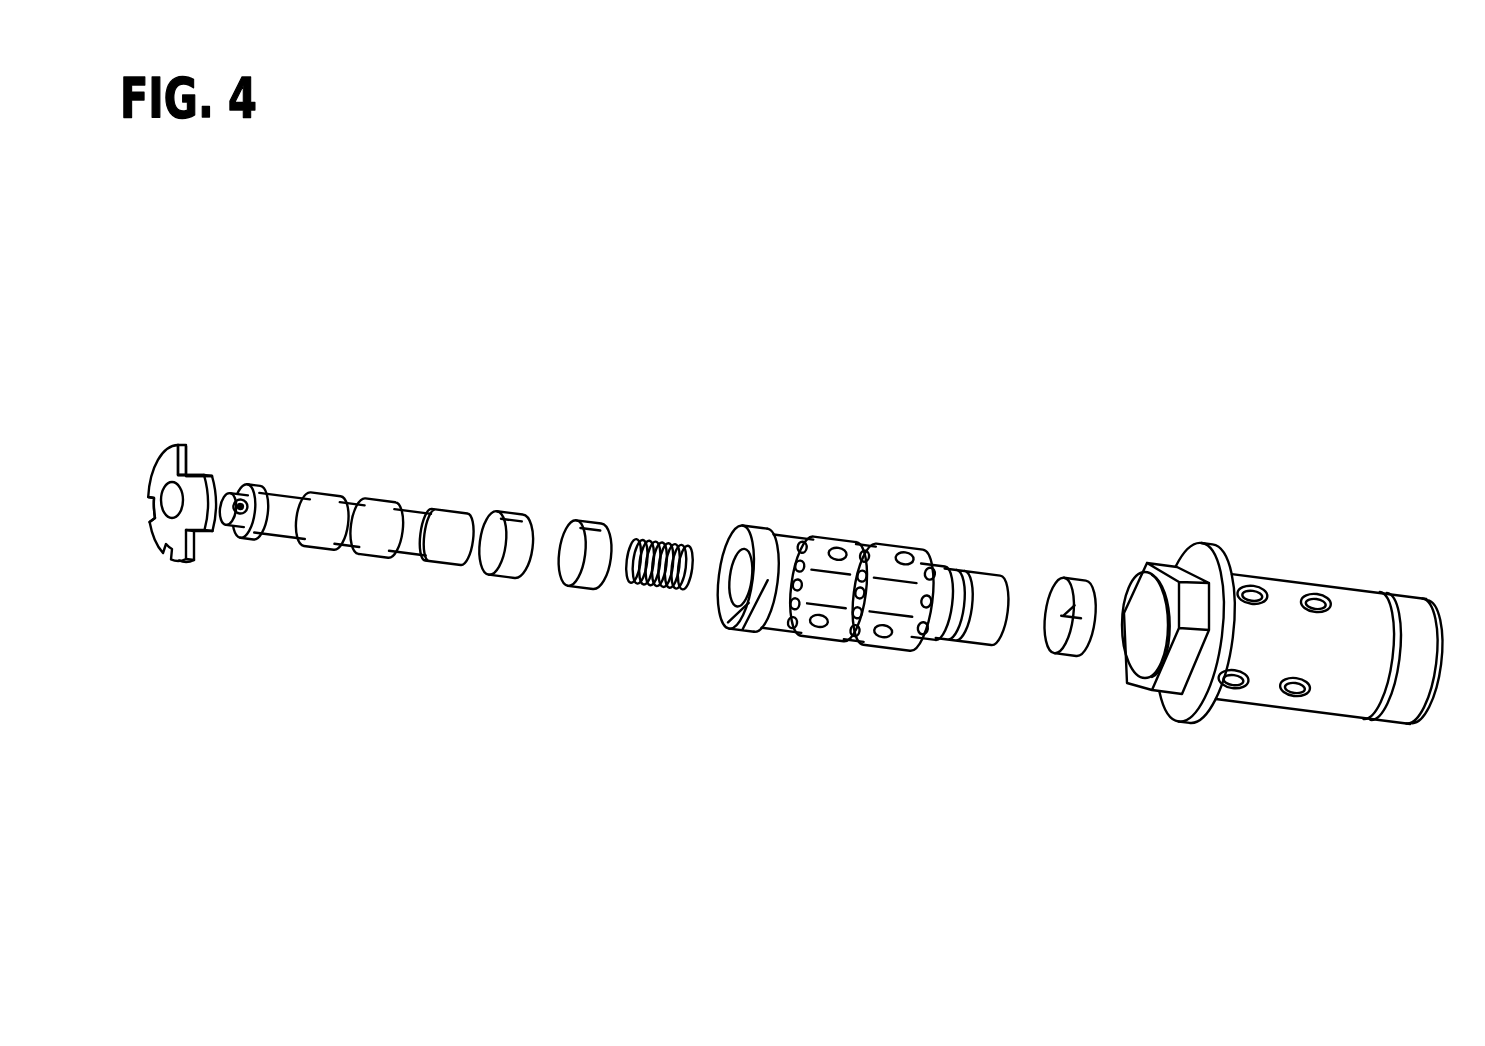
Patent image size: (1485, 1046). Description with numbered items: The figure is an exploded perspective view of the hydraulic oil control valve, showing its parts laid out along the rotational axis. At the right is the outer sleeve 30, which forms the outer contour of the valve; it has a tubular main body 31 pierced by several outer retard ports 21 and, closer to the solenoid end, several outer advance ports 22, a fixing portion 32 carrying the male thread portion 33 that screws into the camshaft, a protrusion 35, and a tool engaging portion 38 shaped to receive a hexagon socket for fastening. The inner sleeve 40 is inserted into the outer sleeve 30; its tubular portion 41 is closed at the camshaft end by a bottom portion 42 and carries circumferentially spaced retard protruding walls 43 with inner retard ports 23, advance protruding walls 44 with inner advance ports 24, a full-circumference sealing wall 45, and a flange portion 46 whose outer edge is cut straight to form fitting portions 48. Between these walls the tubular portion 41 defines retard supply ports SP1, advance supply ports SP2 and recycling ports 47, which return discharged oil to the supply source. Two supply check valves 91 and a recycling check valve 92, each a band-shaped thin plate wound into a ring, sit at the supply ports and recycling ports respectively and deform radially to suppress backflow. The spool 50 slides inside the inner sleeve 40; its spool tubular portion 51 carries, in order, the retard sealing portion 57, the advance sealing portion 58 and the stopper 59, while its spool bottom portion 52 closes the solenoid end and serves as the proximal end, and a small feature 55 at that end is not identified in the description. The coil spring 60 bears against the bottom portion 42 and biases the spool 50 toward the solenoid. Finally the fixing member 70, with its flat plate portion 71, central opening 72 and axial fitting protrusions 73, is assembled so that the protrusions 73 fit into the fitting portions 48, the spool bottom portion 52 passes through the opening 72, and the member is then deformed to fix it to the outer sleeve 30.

The outer retard ports 21 is at (1320, 590).
The outer advance ports 22 is at (1263, 585).
The inner retard ports 23 is at (902, 552).
The inner advance ports 24 is at (843, 548).
The outer sleeve 30 is at (1298, 589).
The main body 31 is at (1357, 600).
The fixing portion 32 is at (1442, 627).
The male thread portion 33 is at (1403, 613).
The protrusion 35 is at (1232, 560).
The tool engaging portion 38 is at (1193, 575).
The inner sleeve 40 is at (869, 582).
The tubular portion 41 is at (927, 636).
The bottom portion 42 is at (1008, 632).
The retard protruding walls 43 is at (873, 650).
The advance protruding walls 44 is at (813, 640).
The sealing wall 45 is at (777, 625).
The flange portion 46 is at (750, 622).
The recycling ports 47 is at (863, 547).
The fitting portions 48 is at (762, 530).
The retard supply ports SP1 is at (930, 565).
The advance supply ports SP2 is at (802, 540).
The spool 50 is at (342, 509).
The spool tubular portion 51 is at (347, 498).
The spool bottom portion 52 is at (222, 527).
The engagement ball 55 is at (250, 487).
The retard sealing portion 57 is at (385, 552).
The advance sealing portion 58 is at (332, 552).
The stopper 59 is at (258, 537).
The spring 60 is at (664, 515).
The fixing member 70 is at (194, 469).
The flat plate portion 71 is at (175, 467).
The opening 72 is at (150, 512).
The fitting protrusions 73 is at (197, 450).
The supply check valves 91 is at (509, 488).
The recycling check valve 92 is at (1072, 565).